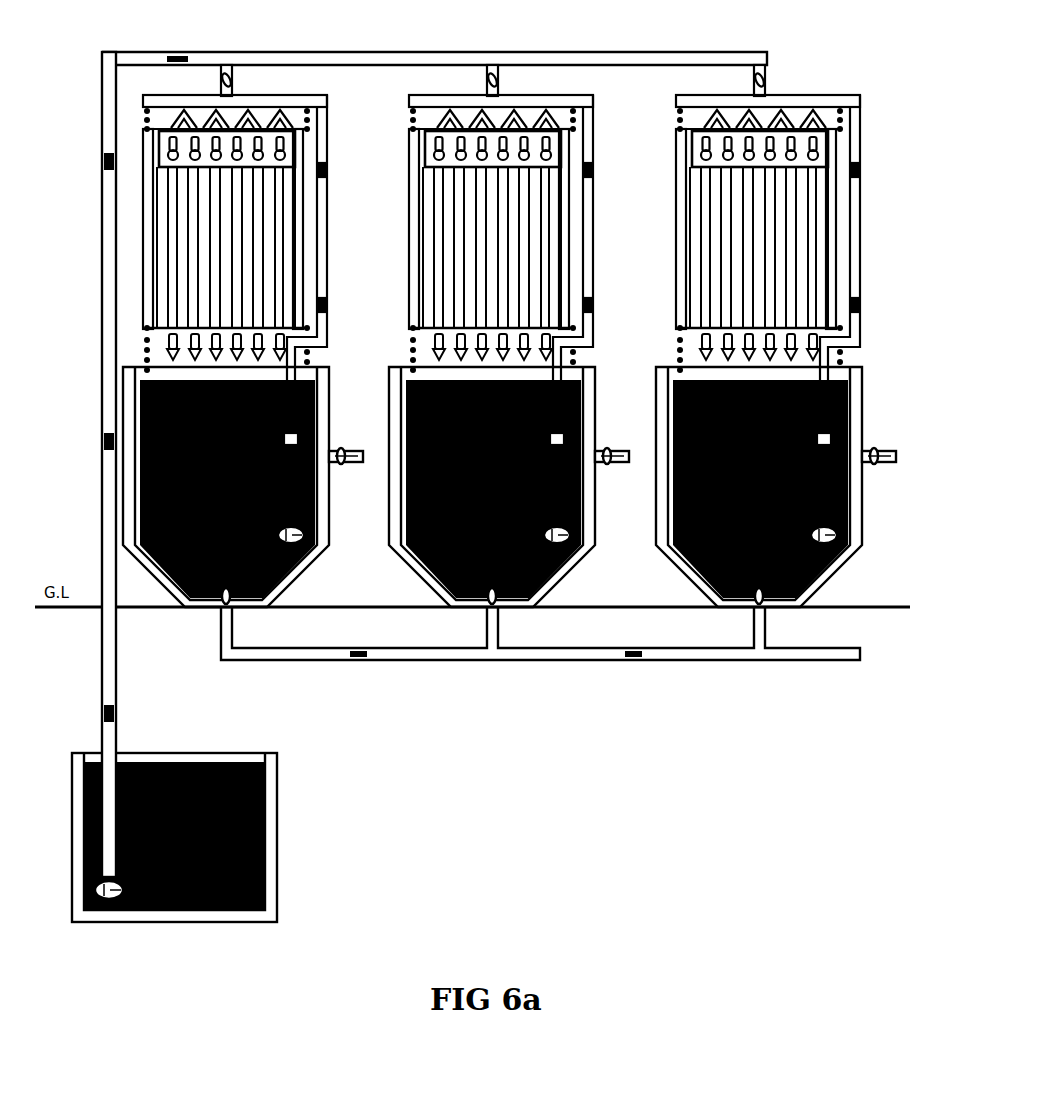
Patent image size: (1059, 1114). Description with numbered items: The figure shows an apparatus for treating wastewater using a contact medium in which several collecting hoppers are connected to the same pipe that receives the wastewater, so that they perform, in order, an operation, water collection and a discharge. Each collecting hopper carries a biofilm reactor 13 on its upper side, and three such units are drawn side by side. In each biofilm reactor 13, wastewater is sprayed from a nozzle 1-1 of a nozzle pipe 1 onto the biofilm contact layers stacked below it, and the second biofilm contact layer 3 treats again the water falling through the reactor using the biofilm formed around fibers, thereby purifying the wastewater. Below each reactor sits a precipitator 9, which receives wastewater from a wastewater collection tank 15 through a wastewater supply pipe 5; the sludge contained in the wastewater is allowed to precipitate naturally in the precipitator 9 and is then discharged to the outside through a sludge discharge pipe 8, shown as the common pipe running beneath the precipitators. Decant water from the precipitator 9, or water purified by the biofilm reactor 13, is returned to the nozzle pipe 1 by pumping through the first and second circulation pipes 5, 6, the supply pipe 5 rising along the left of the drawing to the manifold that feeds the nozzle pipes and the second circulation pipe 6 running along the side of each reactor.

The nozzle pipe 1 is at (257, 98).
The nozzle 1-1 is at (307, 118).
The second biofilm contact layer 3 is at (175, 270).
The wastewater supply pipe 5 is at (102, 490).
The second circulation pipe 6 is at (328, 270).
The sludge discharge pipe 8 is at (415, 660).
The precipitator 9 is at (168, 590).
The biofilm reactor 13 is at (134, 208).
The wastewater collection tank 15 is at (278, 836).